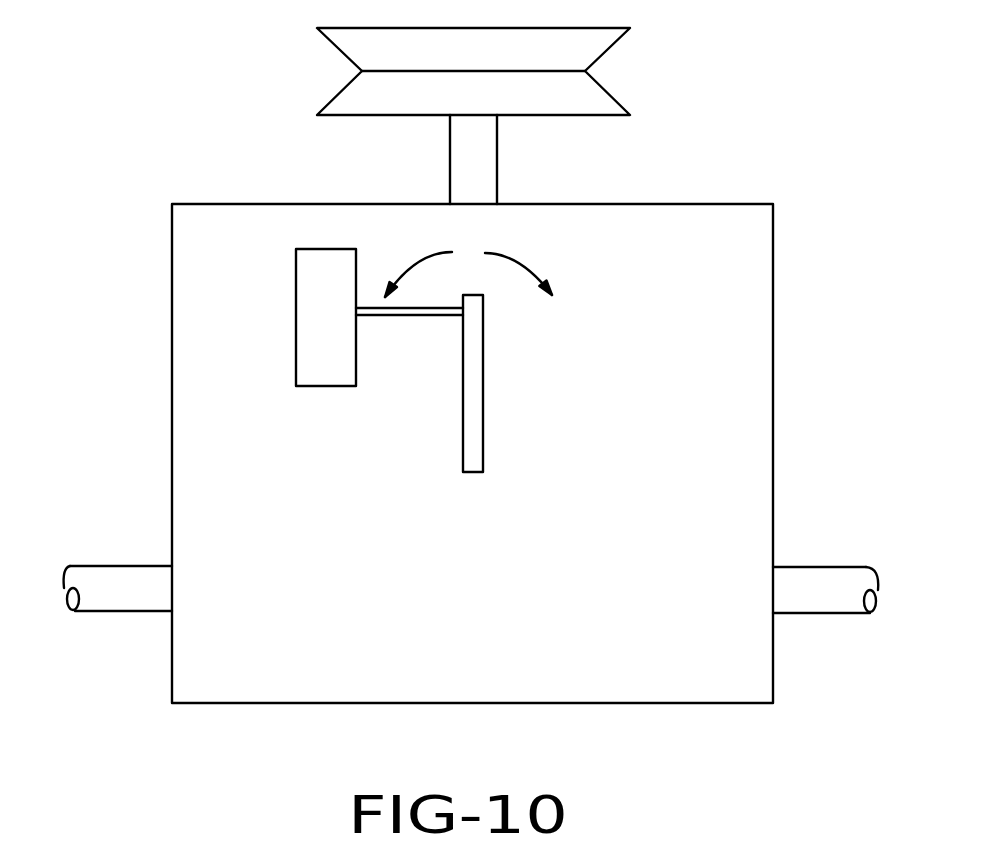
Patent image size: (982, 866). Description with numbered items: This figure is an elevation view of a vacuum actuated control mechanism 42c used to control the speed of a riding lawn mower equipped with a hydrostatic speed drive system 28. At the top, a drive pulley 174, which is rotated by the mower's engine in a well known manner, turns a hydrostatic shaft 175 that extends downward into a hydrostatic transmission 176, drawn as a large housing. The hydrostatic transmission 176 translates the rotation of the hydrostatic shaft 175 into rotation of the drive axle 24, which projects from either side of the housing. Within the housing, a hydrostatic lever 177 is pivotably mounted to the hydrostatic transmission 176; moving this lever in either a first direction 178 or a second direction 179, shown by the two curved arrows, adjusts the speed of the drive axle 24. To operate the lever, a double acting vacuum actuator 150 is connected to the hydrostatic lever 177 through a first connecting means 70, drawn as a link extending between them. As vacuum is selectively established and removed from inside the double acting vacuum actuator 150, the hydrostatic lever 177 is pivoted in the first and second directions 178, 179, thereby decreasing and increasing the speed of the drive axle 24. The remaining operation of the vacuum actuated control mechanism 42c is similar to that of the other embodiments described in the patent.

The hydrostatic speed drive system 28 is at (700, 45).
The drive pulley 174 is at (353, 42).
The hydrostatic shaft 175 is at (482, 172).
The hydrostatic transmission 176 is at (750, 307).
The hydrostatic lever 177 is at (473, 387).
The first direction 178 is at (507, 253).
The second direction 179 is at (428, 253).
The double acting vacuum actuator 150 is at (313, 330).
The first connecting means 70 is at (423, 316).
The vacuum actuated control mechanism 42c is at (138, 410).
The drive axle 24 is at (803, 577).